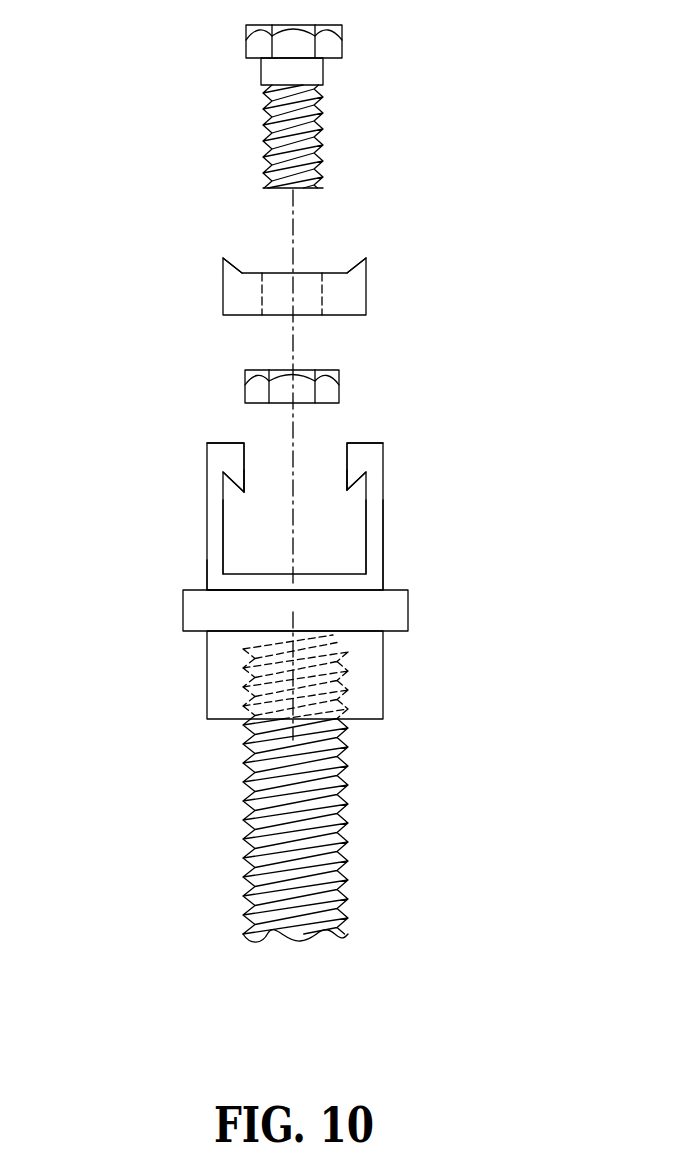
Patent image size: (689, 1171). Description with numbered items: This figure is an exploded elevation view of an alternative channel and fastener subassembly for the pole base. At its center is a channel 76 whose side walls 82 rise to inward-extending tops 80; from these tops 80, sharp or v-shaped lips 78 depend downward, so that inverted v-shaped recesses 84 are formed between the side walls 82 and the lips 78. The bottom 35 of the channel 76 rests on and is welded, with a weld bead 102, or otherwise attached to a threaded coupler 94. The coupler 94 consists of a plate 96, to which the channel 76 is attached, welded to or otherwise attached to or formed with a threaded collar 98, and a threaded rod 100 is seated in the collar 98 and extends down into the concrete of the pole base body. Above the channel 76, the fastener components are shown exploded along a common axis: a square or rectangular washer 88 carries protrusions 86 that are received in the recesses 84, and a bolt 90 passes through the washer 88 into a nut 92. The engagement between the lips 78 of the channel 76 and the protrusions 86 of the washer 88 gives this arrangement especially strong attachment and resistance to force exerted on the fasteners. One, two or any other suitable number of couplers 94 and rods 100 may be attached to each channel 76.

The bottom 35 is at (384, 562).
The channel 76 is at (385, 540).
The lip 78 is at (249, 498).
The inward-extending top 80 is at (222, 443).
The side wall 82 is at (228, 540).
The inverted v-shaped recess 84 is at (230, 487).
The protrusion 86 is at (229, 258).
The washer 88 is at (245, 301).
The bolt 90 is at (318, 103).
The nut 92 is at (340, 385).
The threaded coupler 94 is at (207, 698).
The plate 96 is at (192, 612).
The threaded collar 98 is at (218, 668).
The threaded rod 100 is at (343, 796).
The weld bead 102 is at (207, 588).